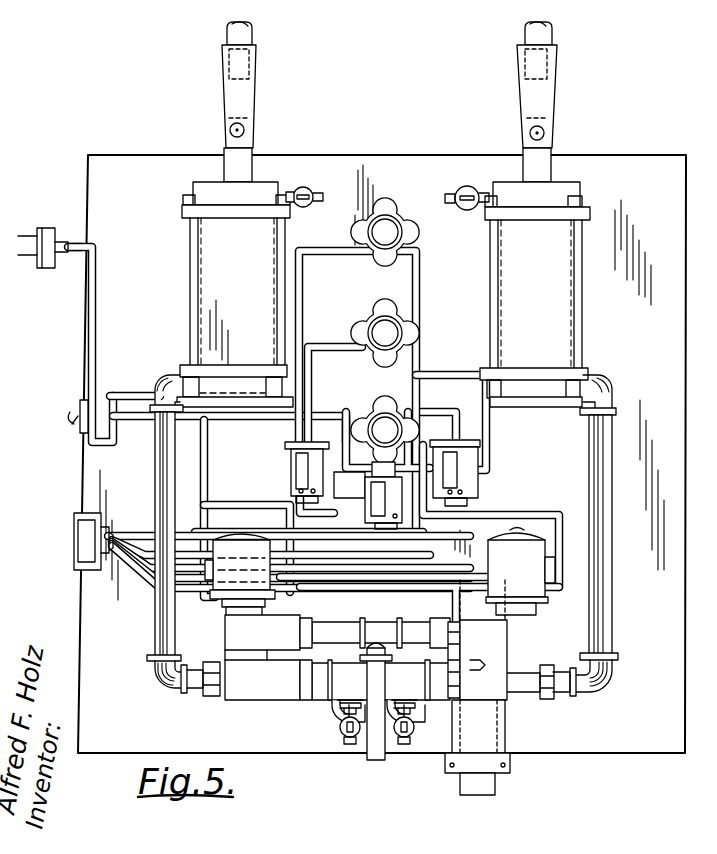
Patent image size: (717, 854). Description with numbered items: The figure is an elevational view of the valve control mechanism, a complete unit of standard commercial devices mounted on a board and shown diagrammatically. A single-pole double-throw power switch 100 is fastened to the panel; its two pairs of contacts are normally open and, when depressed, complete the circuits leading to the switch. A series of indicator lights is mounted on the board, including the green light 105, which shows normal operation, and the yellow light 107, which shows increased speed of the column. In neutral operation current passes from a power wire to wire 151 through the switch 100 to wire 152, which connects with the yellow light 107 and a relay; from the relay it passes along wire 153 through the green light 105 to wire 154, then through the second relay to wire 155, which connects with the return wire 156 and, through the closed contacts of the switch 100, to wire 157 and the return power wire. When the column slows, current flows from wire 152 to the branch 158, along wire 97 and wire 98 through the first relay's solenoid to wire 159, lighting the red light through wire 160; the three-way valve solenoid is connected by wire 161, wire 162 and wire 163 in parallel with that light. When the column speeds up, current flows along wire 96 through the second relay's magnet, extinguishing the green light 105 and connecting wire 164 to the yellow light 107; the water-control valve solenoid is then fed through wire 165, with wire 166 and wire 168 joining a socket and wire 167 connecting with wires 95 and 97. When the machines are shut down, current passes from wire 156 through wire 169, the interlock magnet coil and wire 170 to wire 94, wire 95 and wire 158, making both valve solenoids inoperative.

The single-pole double-throw power switch 100 is at (70, 418).
The wire 151 is at (95, 290).
The wire 152 is at (142, 421).
The wire 153 is at (311, 385).
The wire 154 is at (452, 372).
The wire 155 is at (436, 404).
The return wire 156 is at (138, 392).
The wire 157 is at (93, 246).
The branch 158 is at (209, 463).
The wire 159 is at (276, 520).
The wire 160 is at (304, 300).
The wire 161 is at (230, 502).
The wire 162 is at (330, 441).
The wire 163 is at (208, 600).
The wire 164 is at (455, 441).
The wire 165 is at (505, 511).
The wire 166 is at (550, 600).
The wire 167 is at (452, 607).
The wire 168 is at (505, 725).
The wire 169 is at (366, 505).
The wire 170 is at (338, 569).
The green light 105 is at (378, 346).
The yellow light 107 is at (372, 440).
The wire 94 is at (137, 576).
The wire 95 is at (142, 589).
The wire 96 is at (184, 530).
The wire 97 is at (271, 549).
The wire 98 is at (291, 558).